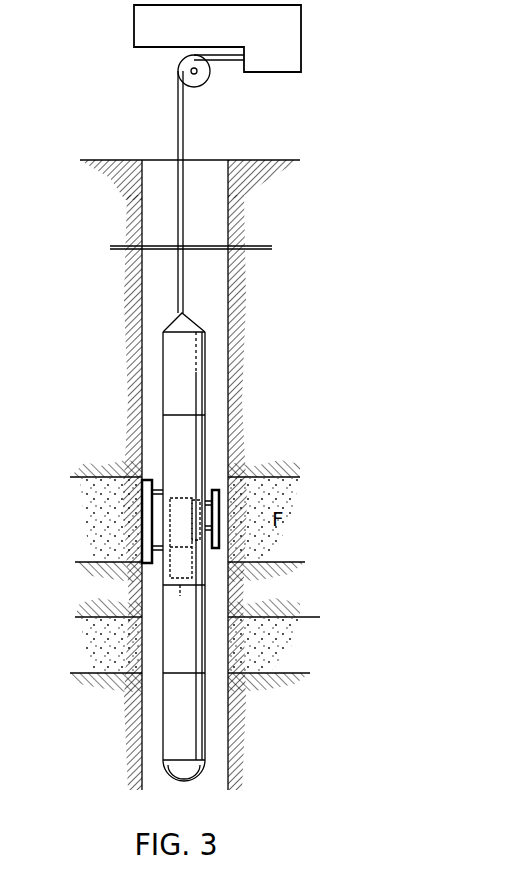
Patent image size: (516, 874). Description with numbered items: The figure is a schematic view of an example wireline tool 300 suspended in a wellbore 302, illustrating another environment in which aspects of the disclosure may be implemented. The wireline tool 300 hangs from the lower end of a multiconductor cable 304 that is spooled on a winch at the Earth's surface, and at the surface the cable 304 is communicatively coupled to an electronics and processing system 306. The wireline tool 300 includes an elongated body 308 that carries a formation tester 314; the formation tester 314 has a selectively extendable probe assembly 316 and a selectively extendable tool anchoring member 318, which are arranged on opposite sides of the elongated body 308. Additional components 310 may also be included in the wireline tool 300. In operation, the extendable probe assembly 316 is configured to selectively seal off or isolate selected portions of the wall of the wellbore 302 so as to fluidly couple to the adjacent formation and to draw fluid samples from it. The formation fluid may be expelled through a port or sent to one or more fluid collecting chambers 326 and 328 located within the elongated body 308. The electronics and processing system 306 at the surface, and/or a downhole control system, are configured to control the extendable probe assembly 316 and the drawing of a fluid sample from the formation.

The wireline tool 300 is at (308, 440).
The wellbore 302 is at (227, 316).
The multiconductor cable 304 is at (187, 217).
The electronics and processing system 306 is at (282, 47).
The elongated body 308 is at (178, 392).
The additional components 310 is at (195, 438).
The formation tester 314 is at (144, 476).
The extendable probe assembly 316 is at (220, 508).
The tool anchoring member 318 is at (146, 535).
The fluid collecting chamber 326 is at (190, 652).
The fluid collecting chamber 328 is at (188, 725).